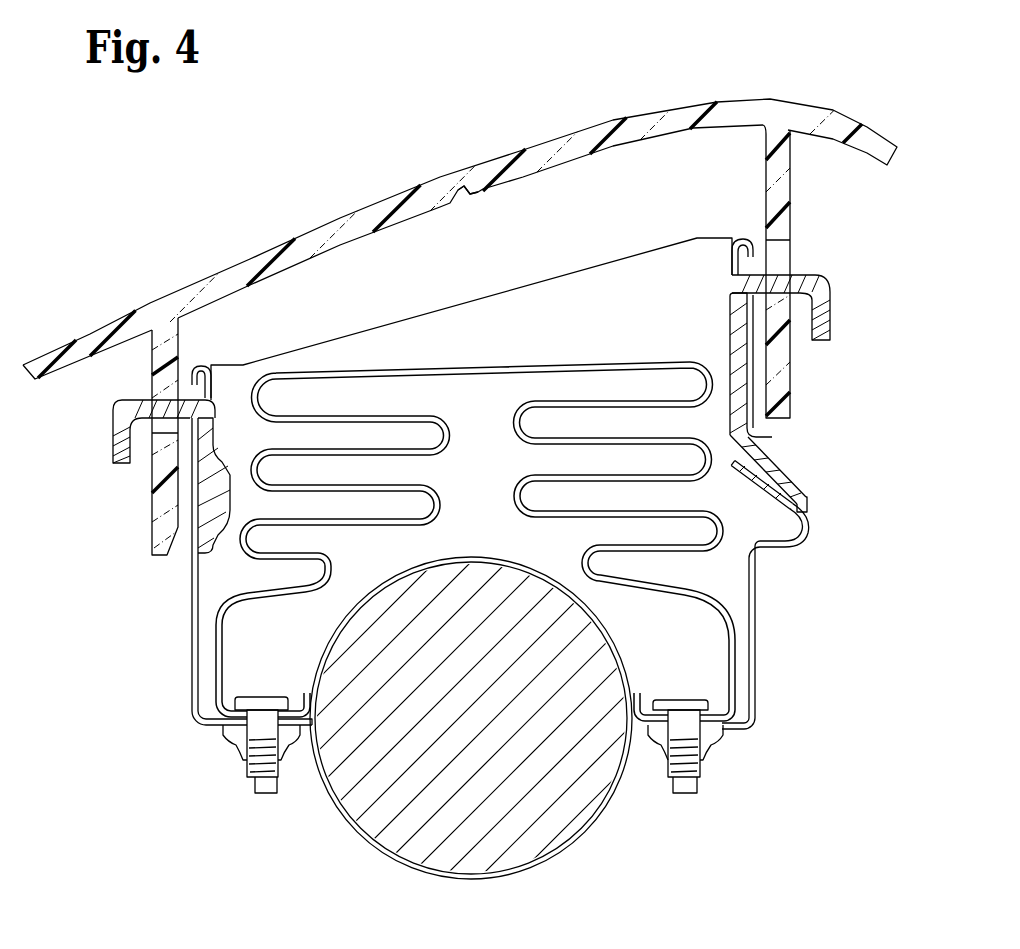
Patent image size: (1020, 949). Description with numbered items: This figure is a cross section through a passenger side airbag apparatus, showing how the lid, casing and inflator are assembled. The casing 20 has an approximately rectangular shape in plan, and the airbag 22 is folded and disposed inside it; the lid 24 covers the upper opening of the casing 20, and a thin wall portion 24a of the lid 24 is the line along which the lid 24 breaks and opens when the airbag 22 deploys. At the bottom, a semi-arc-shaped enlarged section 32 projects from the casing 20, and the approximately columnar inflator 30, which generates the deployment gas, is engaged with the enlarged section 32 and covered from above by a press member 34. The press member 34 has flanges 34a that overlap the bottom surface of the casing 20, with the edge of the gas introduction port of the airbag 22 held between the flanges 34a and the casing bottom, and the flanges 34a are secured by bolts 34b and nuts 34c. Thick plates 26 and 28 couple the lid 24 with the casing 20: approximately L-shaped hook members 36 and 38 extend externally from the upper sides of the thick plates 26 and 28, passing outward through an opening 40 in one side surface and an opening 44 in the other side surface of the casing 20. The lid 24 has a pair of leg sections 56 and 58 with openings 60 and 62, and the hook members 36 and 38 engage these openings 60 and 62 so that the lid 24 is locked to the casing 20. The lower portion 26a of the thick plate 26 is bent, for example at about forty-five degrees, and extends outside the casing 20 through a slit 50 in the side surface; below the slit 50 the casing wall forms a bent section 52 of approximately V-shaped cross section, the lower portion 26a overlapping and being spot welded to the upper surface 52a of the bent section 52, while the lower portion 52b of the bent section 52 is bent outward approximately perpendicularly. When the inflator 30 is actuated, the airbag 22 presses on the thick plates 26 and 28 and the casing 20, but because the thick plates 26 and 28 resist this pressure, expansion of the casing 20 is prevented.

The casing 20 is at (760, 603).
The airbag 22 is at (550, 366).
The lid 24 is at (318, 228).
The thin wall portion 24a is at (472, 194).
The thick plate 26 is at (765, 450).
The lower portion of thick plate 26a is at (808, 498).
The thick plate 28 is at (198, 572).
The inflator 30 is at (553, 811).
The enlarged section 32 is at (362, 834).
The press member 34 is at (452, 558).
The flanges 34a is at (289, 696).
The bolts 34b is at (258, 793).
The nuts 34c is at (240, 760).
The hook member 36 is at (832, 304).
The hook member 38 is at (113, 437).
The opening 40 is at (730, 323).
The opening 44 is at (152, 481).
The slit 50 is at (764, 429).
The bent section 52 is at (810, 534).
The upper surface of bent section 52a is at (764, 496).
The lower portion of bent section 52b is at (770, 533).
The leg section 56 is at (791, 188).
The leg section 58 is at (178, 355).
The opening 60 is at (793, 260).
The opening 62 is at (148, 389).